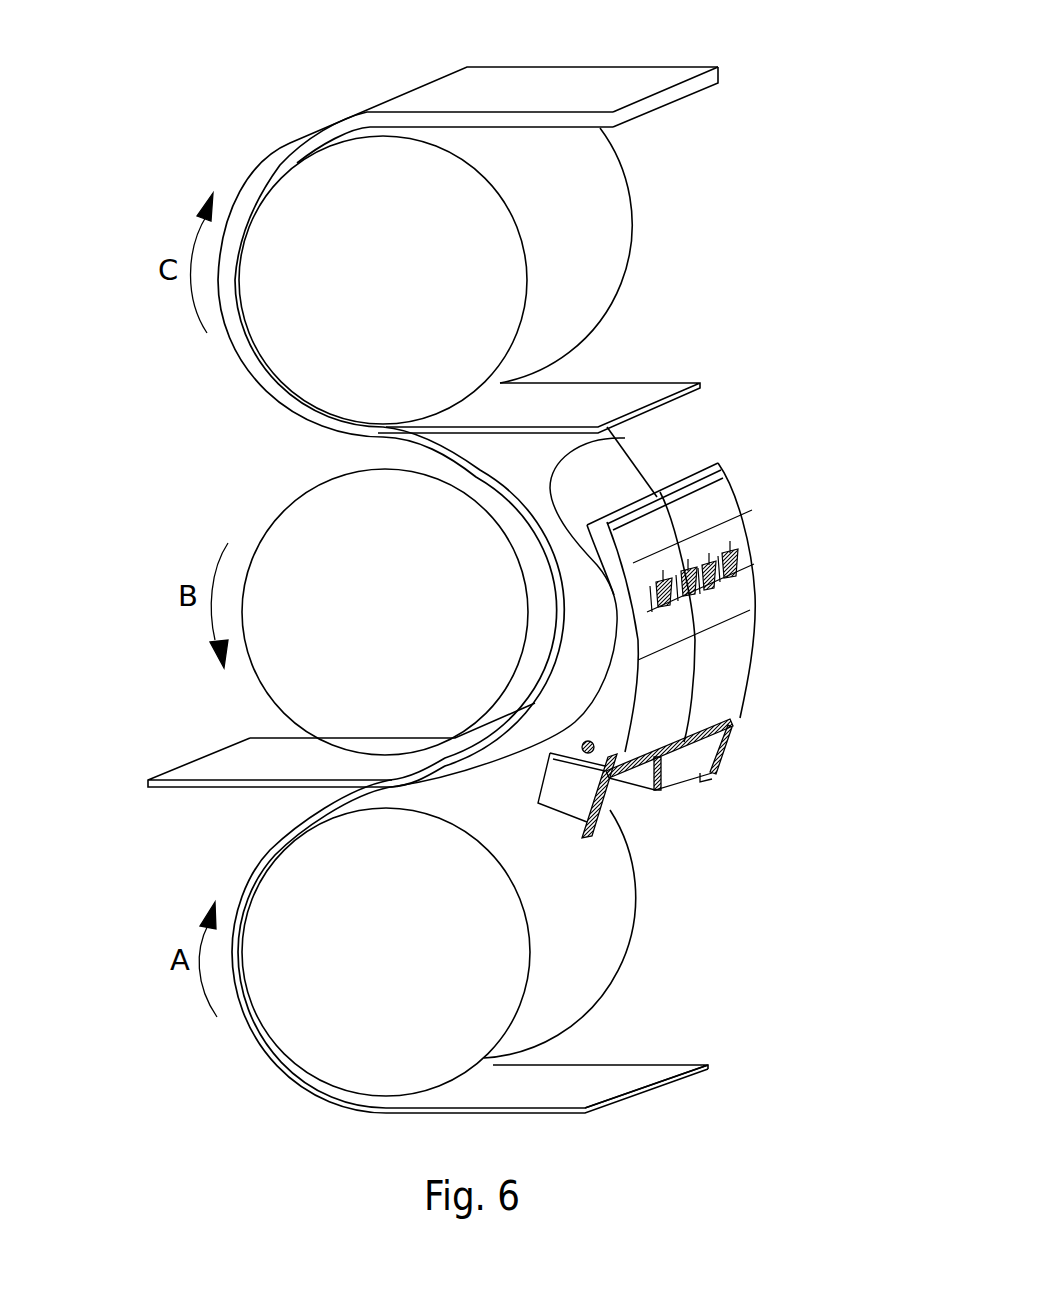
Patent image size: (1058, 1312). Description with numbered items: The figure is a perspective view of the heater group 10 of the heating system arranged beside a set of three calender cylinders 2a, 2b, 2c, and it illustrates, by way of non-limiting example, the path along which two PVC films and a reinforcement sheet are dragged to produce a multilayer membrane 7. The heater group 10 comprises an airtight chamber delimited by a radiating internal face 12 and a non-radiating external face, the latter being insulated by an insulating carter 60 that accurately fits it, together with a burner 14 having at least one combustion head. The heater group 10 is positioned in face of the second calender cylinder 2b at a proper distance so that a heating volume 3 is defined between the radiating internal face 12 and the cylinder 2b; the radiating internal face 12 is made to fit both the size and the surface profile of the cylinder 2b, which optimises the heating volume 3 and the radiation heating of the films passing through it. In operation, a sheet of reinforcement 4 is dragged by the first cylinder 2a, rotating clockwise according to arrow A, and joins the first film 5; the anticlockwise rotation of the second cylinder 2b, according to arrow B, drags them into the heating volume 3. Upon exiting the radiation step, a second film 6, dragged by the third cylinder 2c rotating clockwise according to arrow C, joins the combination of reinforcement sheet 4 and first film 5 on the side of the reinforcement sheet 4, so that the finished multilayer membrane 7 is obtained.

The first calender cylinder 2a is at (416, 973).
The second calender cylinder 2b is at (330, 580).
The third calender cylinder 2c is at (300, 322).
The heating volume 3 is at (518, 748).
The sheet of reinforcement 4 is at (663, 1082).
The first film 5 is at (245, 743).
The second film 6 is at (662, 399).
The multilayer membrane 7 is at (660, 91).
The heater group 10 is at (692, 682).
The radiating internal face 12 is at (625, 438).
The burner 14 is at (633, 790).
The insulating carter 60 is at (722, 684).